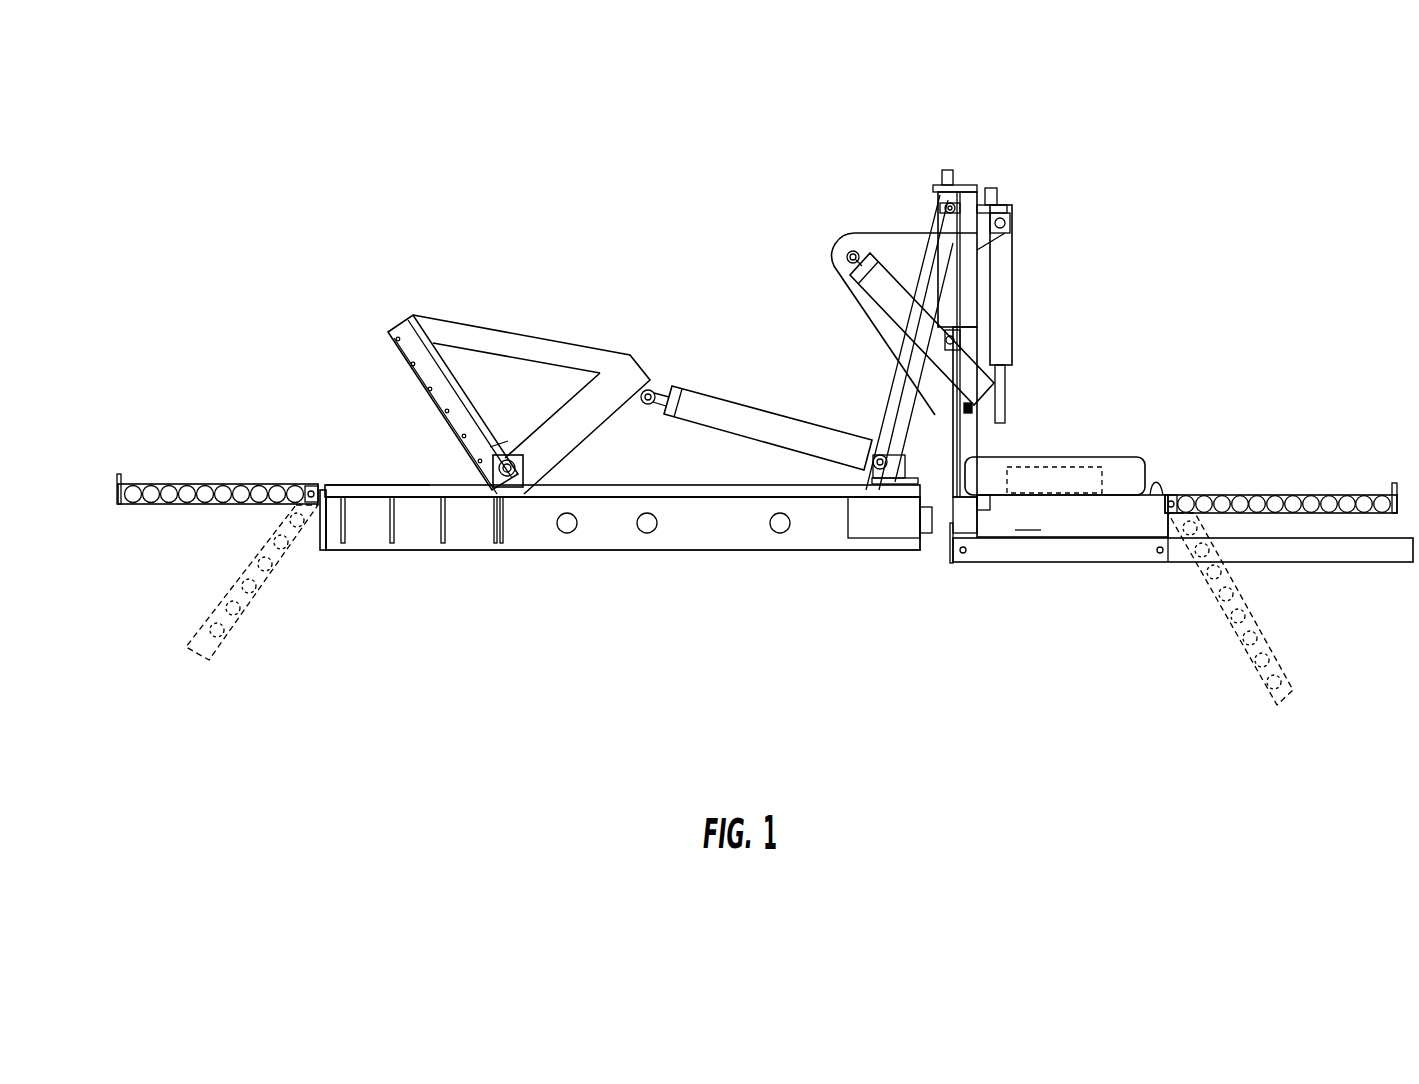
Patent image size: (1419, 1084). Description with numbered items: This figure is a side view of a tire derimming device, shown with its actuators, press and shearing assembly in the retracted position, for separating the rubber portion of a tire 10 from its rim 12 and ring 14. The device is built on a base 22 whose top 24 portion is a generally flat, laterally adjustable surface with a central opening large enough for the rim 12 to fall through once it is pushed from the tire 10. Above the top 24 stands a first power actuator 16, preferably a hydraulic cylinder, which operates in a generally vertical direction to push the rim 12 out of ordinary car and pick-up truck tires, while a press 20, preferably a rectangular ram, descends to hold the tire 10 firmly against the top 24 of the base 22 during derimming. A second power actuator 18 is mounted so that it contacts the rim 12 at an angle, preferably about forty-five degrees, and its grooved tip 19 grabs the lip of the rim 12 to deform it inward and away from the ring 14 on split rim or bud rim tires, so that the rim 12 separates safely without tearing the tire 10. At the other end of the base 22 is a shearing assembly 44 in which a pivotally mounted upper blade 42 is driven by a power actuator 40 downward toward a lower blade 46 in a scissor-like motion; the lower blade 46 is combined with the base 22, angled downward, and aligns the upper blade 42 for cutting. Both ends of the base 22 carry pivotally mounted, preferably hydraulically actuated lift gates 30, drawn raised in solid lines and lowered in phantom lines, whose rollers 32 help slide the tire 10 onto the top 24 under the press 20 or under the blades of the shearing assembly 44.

The tire 10 is at (1132, 477).
The rim 12 is at (1078, 480).
The ring 14 is at (1085, 460).
The first power actuator 16 is at (1003, 398).
The second power actuator 18 is at (1008, 378).
The tip 19 is at (995, 435).
The press 20 is at (958, 410).
The base 22 is at (703, 520).
The top portion of the base 24 is at (1155, 500).
The lift gate 30 is at (210, 490).
The rollers 32 is at (130, 486).
The power actuator 40 is at (738, 425).
The upper blade 42 is at (393, 360).
The shearing assembly 44 is at (475, 337).
The lower blade 46 is at (410, 488).